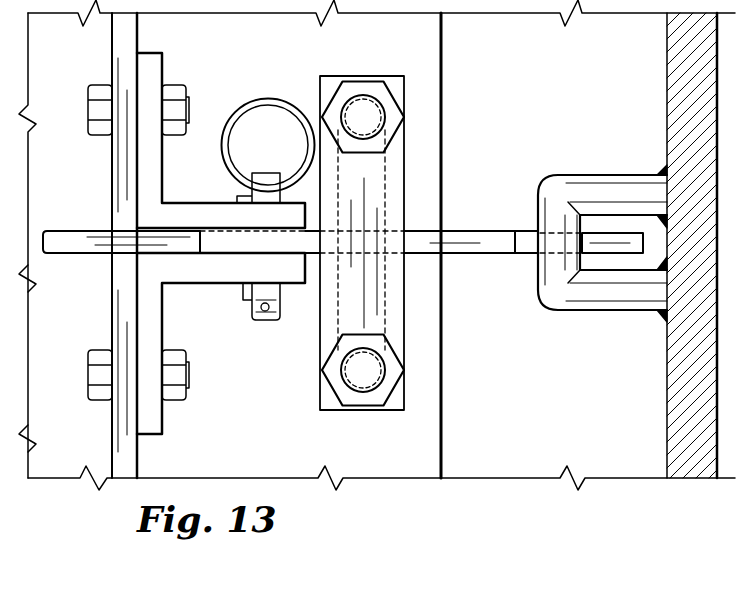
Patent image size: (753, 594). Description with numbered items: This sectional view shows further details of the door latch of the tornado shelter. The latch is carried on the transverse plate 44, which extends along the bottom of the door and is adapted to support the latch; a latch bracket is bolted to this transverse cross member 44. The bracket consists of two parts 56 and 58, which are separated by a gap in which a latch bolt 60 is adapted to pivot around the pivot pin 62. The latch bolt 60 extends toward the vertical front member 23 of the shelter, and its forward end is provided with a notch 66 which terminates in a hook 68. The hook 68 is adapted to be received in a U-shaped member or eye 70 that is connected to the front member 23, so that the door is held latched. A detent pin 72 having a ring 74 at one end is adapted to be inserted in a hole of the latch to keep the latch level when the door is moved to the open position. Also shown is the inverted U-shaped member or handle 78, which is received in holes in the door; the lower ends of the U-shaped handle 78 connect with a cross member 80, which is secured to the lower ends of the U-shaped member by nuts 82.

The vertical front member 23 is at (690, 53).
The transverse plate 44 is at (122, 43).
The bracket part 56 is at (150, 180).
The bracket part 58 is at (150, 318).
The latch bolt 60 is at (453, 243).
The pivot pin 62 is at (246, 294).
The notch 66 is at (523, 247).
The hook 68 is at (604, 245).
The U-shaped member or eye 70 is at (600, 192).
The detent pin 72 is at (282, 320).
The ring 74 is at (262, 98).
The U-shaped handle 78 is at (367, 116).
The cross member 80 is at (363, 198).
The nuts 82 is at (380, 88).